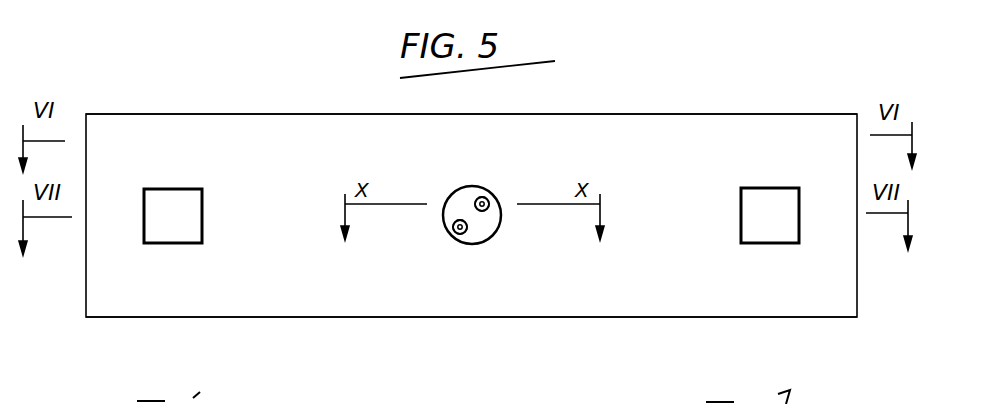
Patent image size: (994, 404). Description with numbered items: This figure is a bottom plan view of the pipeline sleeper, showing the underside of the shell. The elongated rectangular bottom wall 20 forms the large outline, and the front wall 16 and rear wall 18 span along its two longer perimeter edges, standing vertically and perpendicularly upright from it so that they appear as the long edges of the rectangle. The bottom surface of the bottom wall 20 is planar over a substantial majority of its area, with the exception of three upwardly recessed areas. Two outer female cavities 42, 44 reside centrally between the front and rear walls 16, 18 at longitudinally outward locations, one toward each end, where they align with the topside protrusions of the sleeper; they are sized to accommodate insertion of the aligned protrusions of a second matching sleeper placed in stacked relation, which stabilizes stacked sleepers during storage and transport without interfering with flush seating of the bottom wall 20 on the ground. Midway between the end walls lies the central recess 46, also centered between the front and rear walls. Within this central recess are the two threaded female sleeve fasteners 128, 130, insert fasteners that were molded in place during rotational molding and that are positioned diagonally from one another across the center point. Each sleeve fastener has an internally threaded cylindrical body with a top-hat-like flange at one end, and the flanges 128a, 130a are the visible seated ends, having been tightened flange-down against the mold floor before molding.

The front wall 16 is at (690, 113).
The rear wall 18 is at (657, 318).
The bottom wall 20 is at (620, 130).
The outer female cavity 42 is at (170, 233).
The outer female cavity 44 is at (770, 230).
The central recess 46 is at (483, 231).
The threaded female sleeve fastener 128 is at (442, 222).
The flange 128a is at (455, 235).
The threaded female sleeve fastener 130 is at (483, 188).
The flange 130a is at (490, 205).